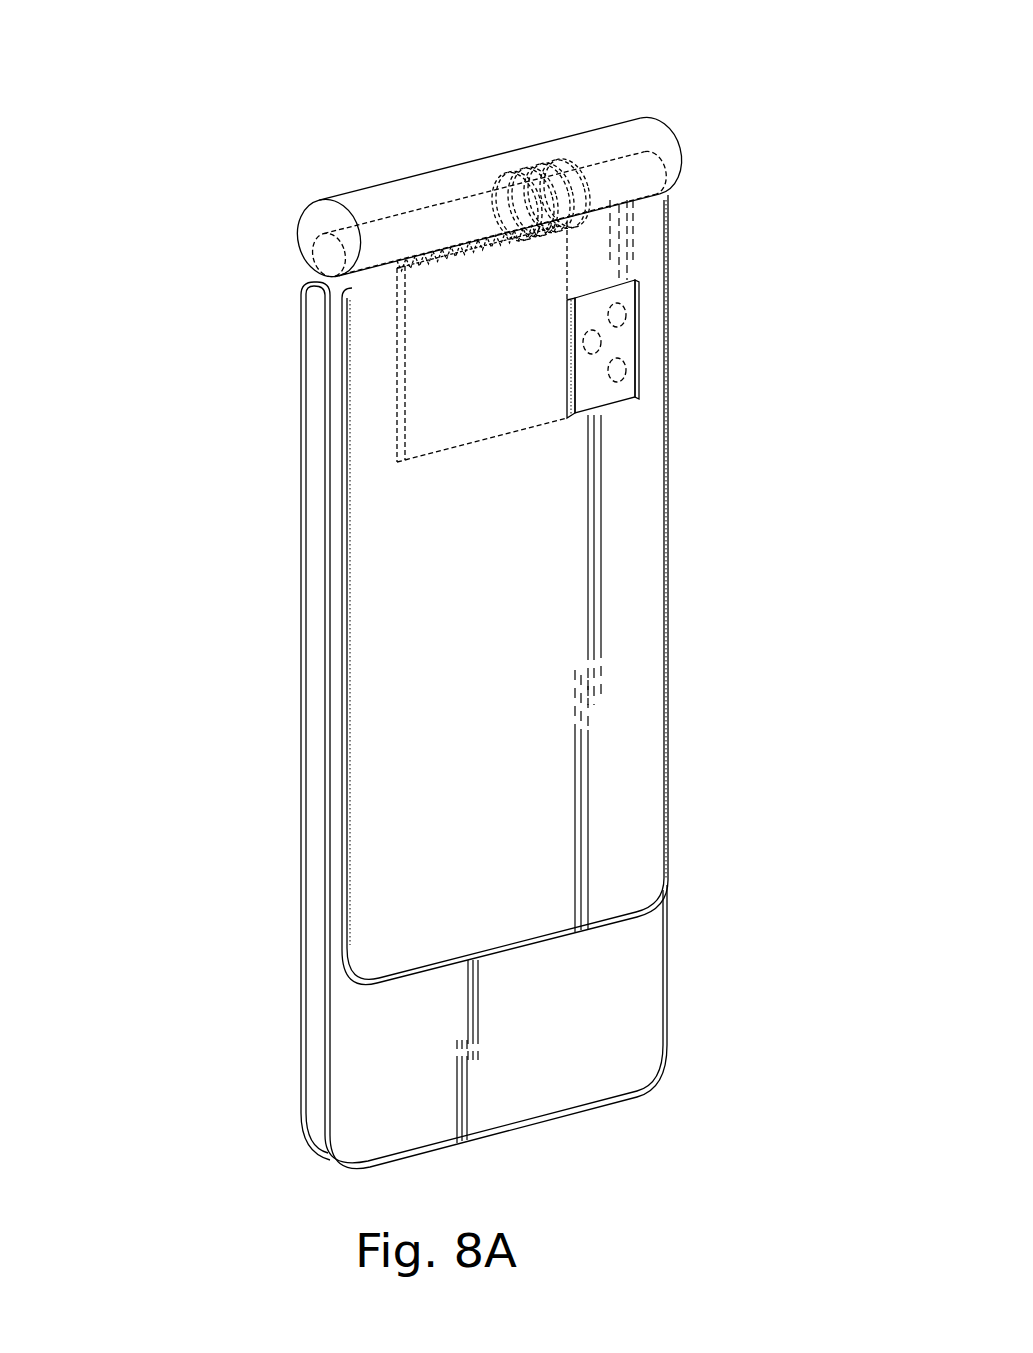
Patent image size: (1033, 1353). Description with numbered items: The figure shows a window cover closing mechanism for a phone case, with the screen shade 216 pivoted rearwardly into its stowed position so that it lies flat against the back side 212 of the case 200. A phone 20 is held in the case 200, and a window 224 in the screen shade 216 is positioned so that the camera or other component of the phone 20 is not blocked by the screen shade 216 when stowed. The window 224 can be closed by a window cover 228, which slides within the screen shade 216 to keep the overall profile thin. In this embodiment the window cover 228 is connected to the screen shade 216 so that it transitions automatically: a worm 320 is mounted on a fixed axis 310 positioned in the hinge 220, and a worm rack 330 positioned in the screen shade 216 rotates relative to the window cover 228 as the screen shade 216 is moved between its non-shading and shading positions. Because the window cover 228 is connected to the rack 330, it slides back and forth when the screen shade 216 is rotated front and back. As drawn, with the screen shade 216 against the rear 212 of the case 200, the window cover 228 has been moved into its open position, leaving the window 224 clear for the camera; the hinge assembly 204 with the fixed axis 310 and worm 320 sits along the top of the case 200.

The case 200 is at (160, 45).
The rollable display assembly 204 is at (502, 0).
The back side of case 212 is at (665, 1000).
The screen shade 216 is at (663, 910).
The hinge 220 is at (668, 138).
The window 224 is at (697, 334).
The phone 20 is at (617, 343).
The window cover 228 is at (512, 435).
The fixed axis 310 is at (622, 153).
The worm 320 is at (528, 168).
The worm rack 330 is at (397, 272).